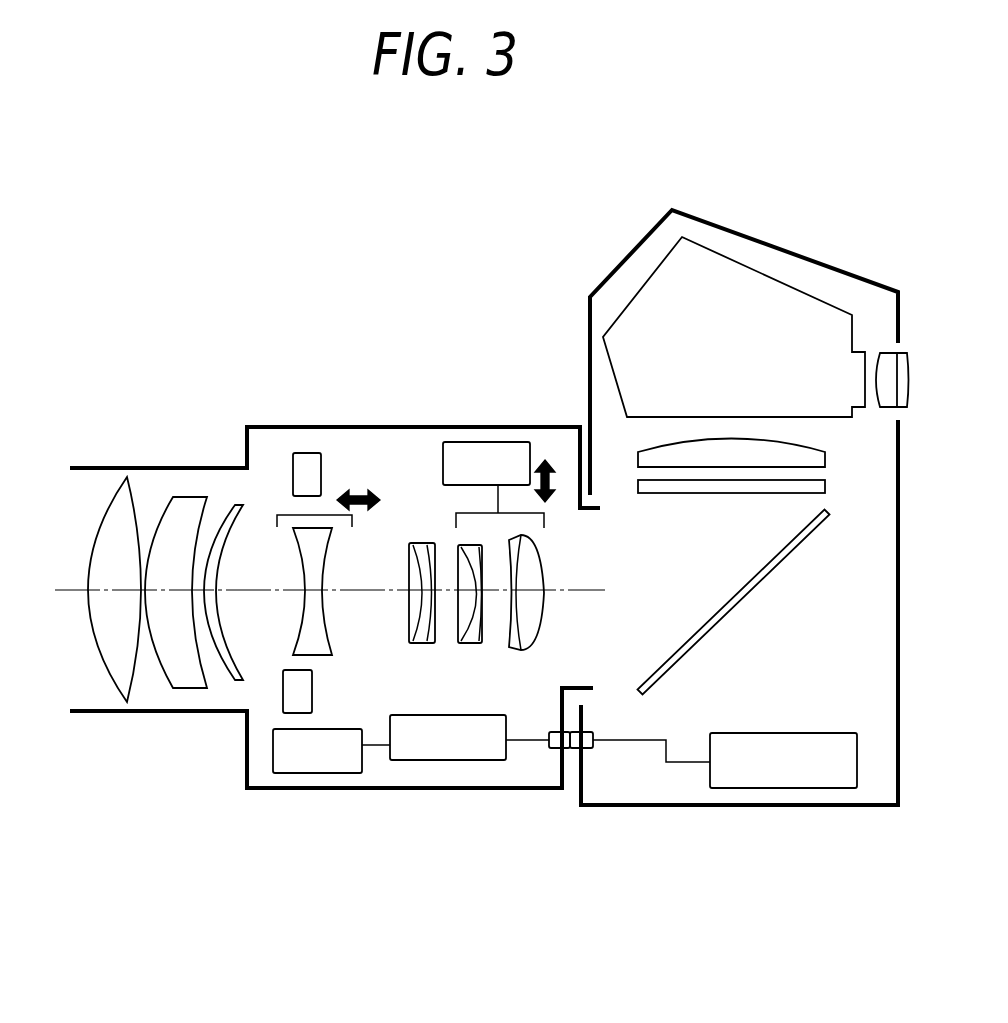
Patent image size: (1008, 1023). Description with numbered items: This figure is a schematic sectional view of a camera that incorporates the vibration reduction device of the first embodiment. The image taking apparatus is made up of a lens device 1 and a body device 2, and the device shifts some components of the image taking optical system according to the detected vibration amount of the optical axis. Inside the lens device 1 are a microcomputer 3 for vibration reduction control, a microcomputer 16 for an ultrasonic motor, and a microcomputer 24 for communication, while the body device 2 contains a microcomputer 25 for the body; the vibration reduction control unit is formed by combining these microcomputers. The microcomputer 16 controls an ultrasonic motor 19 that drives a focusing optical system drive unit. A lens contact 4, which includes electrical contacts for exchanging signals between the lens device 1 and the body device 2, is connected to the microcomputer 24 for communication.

The lens device 1 is at (162, 467).
The body device 2 is at (797, 252).
The microcomputer for vibration reduction control 3 is at (495, 447).
The ultrasonic motor 19 is at (308, 455).
The microcomputer for an ultrasonic motor 16 is at (345, 773).
The microcomputer for a communication 24 is at (480, 760).
The lens contact 4 is at (573, 750).
The microcomputer for a body 25 is at (785, 788).